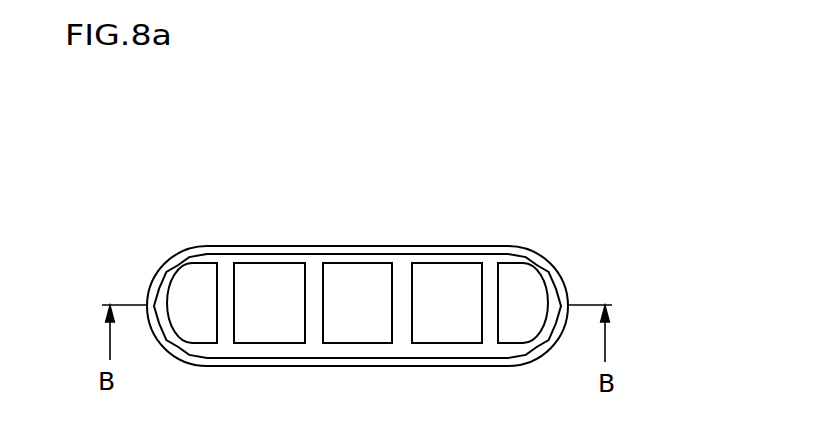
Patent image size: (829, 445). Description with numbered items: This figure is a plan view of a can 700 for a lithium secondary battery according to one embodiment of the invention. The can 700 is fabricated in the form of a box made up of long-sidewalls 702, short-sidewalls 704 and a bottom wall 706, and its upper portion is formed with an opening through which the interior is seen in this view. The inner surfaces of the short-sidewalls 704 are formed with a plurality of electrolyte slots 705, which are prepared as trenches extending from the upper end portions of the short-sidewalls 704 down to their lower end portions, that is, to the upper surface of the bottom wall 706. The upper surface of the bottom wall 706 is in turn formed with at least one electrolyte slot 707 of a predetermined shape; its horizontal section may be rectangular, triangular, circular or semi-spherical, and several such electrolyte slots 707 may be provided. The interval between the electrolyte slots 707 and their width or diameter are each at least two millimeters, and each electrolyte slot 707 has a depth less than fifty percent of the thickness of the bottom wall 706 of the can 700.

The can 700 is at (552, 166).
The long-sidewalls 702 is at (231, 246).
The short-sidewalls 704 is at (558, 278).
The electrolyte slots 705 is at (543, 255).
The bottom wall 706 is at (314, 257).
The electrolyte slot 707 is at (446, 278).